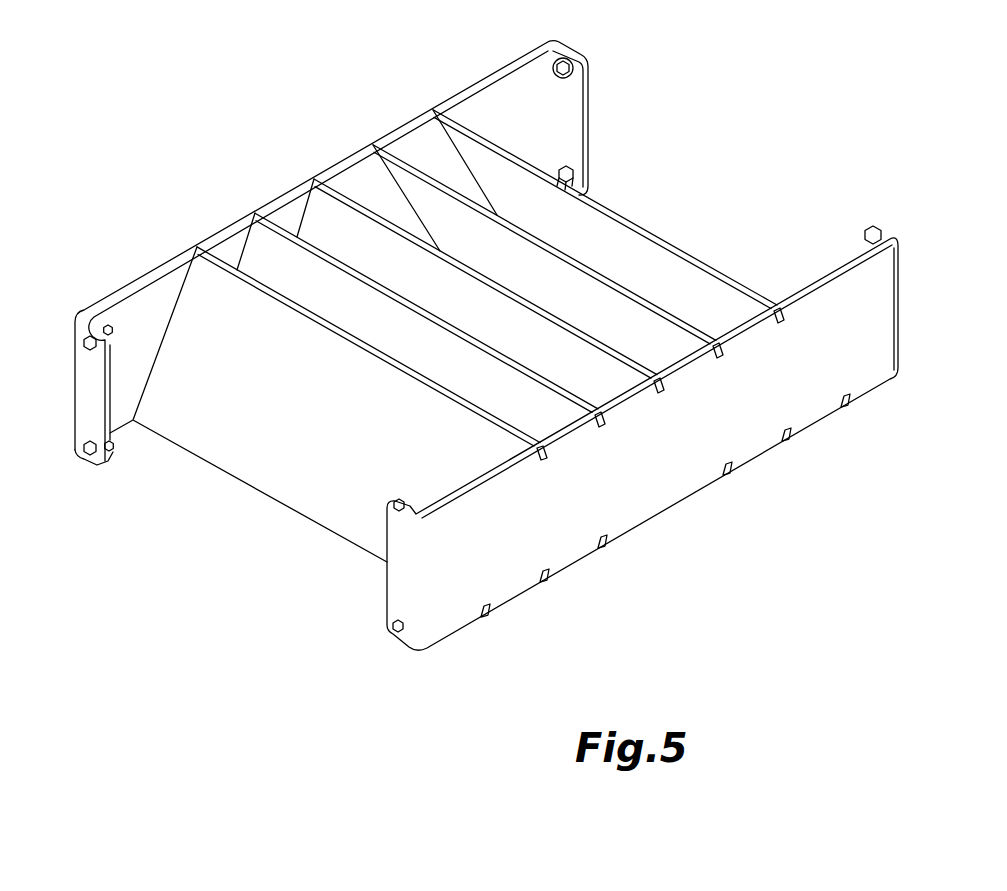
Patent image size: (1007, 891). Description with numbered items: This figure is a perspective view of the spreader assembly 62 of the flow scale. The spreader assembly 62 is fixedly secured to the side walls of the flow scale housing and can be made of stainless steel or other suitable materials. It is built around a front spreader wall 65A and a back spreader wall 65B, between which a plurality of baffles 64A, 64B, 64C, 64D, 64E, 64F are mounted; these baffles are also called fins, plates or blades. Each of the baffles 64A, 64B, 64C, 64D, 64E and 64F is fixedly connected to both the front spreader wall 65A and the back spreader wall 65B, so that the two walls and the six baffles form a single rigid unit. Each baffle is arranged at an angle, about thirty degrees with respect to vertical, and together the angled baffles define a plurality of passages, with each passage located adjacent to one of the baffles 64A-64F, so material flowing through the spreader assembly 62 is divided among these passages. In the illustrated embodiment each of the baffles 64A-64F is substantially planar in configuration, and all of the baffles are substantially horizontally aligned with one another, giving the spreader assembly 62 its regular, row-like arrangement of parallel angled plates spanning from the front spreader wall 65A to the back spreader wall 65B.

The spreader assembly 62 is at (490, 337).
The baffle 64A is at (352, 419).
The baffle 64B is at (444, 354).
The baffle 64C is at (506, 319).
The baffle 64D is at (664, 380).
The baffle 64E is at (569, 281).
The baffle 64F is at (634, 251).
The front spreader wall 65A is at (603, 490).
The back spreader wall 65B is at (506, 103).